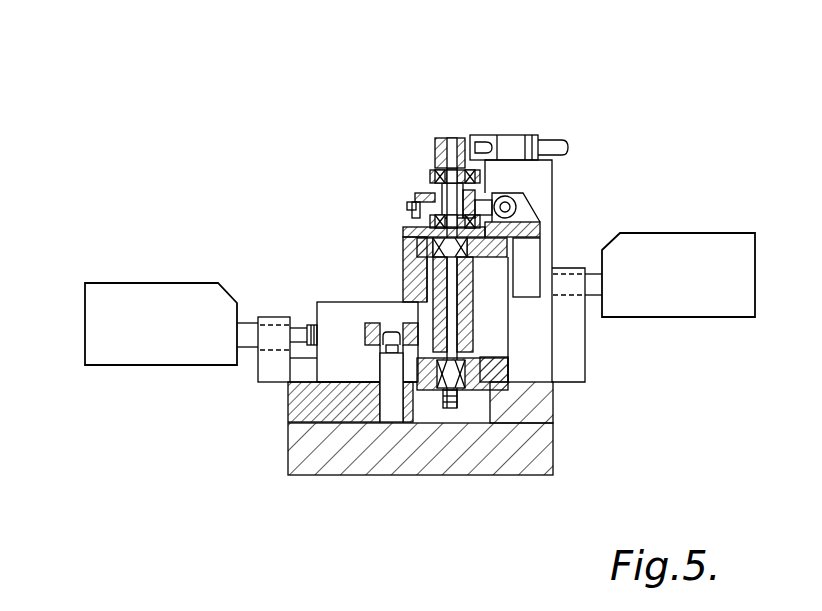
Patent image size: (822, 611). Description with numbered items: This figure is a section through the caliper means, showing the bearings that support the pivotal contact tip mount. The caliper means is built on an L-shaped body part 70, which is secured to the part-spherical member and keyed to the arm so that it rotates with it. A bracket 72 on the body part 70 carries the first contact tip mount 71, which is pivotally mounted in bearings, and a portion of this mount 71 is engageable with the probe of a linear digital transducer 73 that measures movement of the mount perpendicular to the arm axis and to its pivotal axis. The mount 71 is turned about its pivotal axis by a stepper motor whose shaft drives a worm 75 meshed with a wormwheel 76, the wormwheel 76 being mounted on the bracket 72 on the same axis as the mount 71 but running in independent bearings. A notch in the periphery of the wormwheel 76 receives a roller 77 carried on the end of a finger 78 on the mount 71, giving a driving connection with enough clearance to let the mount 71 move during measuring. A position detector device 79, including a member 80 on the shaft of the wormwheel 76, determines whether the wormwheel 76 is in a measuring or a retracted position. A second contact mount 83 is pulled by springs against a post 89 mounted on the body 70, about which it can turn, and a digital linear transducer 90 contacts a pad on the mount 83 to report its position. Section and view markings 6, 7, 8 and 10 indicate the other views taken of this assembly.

The section line VI-VI 6 is at (414, 332).
The view arrow VII 7 is at (460, 92).
The section line VIII-VIII 8 is at (469, 207).
The direction arrow 10 is at (642, 372).
The L-shaped body part 70 is at (428, 455).
The contact tip mount 71 is at (433, 292).
The bracket 72 is at (492, 330).
The linear digital transducer 73 is at (688, 248).
The worm 75 is at (511, 207).
The wormwheel 76 is at (417, 195).
The roller 77 is at (408, 207).
The finger 78 is at (413, 263).
The position detector device 79 is at (465, 118).
The member 80 is at (436, 138).
The second contact mount 83 is at (370, 337).
The post 89 is at (388, 368).
The digital linear transducer 90 is at (157, 350).